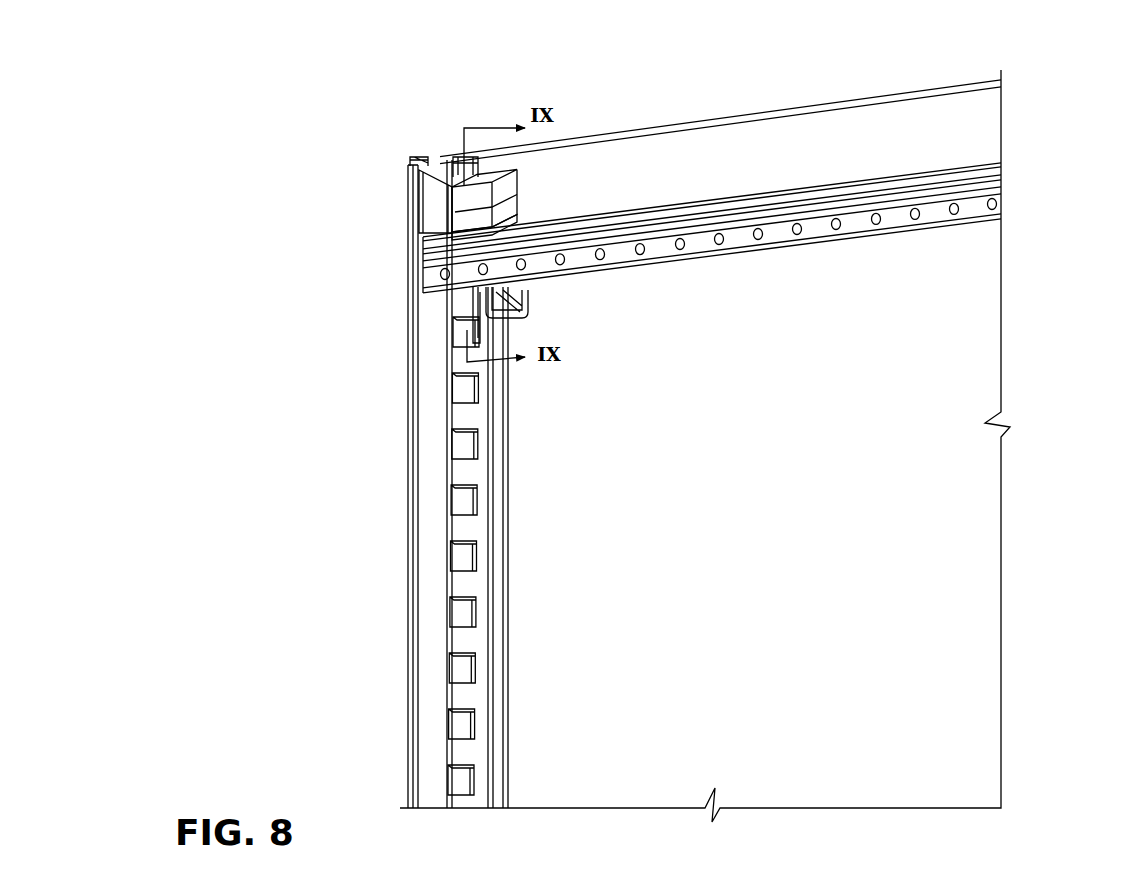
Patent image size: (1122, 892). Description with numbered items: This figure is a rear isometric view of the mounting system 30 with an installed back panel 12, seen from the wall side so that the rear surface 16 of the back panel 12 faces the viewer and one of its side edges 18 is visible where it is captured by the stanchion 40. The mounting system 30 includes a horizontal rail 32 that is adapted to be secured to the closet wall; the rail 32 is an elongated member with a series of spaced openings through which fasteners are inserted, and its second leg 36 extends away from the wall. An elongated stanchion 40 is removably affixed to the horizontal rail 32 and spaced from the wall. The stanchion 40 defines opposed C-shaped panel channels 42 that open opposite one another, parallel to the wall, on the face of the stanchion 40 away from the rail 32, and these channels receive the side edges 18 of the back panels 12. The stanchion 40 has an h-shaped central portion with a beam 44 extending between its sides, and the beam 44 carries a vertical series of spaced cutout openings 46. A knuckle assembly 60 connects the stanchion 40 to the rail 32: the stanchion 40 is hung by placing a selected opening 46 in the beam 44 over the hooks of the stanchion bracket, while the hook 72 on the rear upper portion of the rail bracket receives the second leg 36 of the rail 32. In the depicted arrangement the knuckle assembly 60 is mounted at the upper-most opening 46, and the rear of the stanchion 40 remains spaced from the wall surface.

The back panel 12 is at (893, 127).
The rear surface 16 is at (763, 150).
The side edge 18 is at (462, 185).
The mounting system 30 is at (428, 237).
The horizontal rail 32 is at (950, 224).
The second leg 36 is at (958, 167).
The stanchion 40 is at (400, 607).
The panel channel 42 is at (418, 160).
The beam 44 is at (463, 417).
The cutout opening 46 is at (470, 336).
The knuckle assembly 60 is at (525, 210).
The hook 72 is at (500, 238).